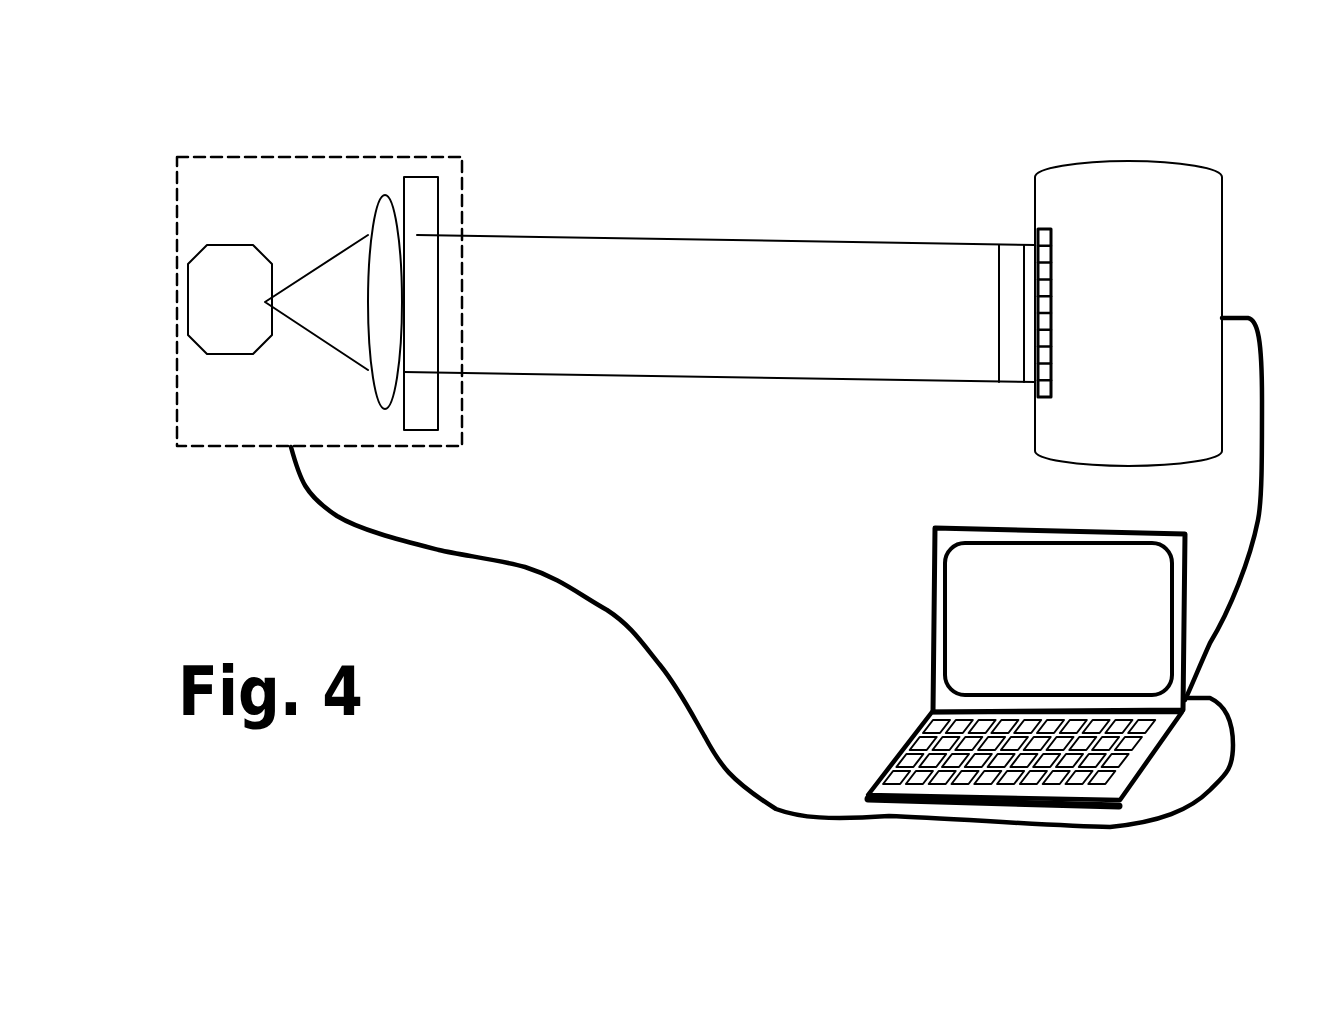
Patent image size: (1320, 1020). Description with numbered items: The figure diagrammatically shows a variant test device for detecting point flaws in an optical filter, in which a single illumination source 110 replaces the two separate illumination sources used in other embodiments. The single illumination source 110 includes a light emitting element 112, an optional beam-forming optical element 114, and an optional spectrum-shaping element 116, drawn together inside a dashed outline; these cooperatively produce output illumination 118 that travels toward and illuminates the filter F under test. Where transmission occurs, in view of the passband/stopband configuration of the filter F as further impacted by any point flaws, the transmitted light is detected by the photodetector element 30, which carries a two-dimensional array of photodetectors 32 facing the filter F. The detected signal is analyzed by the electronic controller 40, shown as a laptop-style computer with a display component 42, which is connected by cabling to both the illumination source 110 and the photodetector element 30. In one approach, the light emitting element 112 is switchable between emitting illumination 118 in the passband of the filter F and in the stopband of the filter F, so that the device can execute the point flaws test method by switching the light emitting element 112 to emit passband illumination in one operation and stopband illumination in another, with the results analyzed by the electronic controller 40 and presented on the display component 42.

The single illumination source 110 is at (242, 157).
The light emitting element 112 is at (199, 301).
The beam-forming optical element 114 is at (390, 195).
The spectrum-shaping element 116 is at (422, 177).
The output illumination 118 is at (717, 242).
The filter F is at (1000, 393).
The photodetector element 30 is at (1131, 159).
The two-dimensional array of photodetectors 32 is at (1051, 235).
The electronic controller 40 is at (842, 616).
The display component 42 is at (1074, 631).